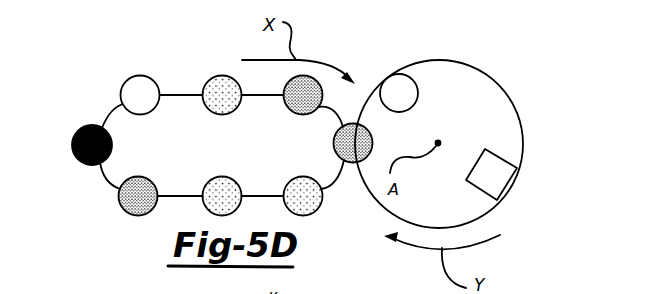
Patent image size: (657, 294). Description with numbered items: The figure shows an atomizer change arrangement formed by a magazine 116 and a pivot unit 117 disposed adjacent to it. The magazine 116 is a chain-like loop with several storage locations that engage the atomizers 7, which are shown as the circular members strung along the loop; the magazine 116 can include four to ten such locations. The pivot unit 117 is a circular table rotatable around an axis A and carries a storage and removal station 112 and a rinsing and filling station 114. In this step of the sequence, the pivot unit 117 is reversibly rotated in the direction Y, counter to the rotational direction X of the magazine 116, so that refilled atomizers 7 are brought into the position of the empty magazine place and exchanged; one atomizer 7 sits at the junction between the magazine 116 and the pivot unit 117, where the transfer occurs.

The atomizers 7 is at (222, 93).
The storage and removal station 112 is at (398, 91).
The rinsing and filling station 114 is at (490, 175).
The magazine 116 is at (110, 187).
The pivot unit 117 is at (517, 107).